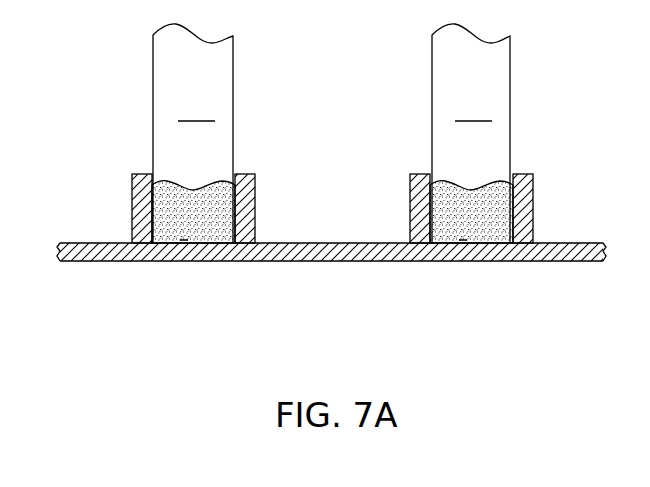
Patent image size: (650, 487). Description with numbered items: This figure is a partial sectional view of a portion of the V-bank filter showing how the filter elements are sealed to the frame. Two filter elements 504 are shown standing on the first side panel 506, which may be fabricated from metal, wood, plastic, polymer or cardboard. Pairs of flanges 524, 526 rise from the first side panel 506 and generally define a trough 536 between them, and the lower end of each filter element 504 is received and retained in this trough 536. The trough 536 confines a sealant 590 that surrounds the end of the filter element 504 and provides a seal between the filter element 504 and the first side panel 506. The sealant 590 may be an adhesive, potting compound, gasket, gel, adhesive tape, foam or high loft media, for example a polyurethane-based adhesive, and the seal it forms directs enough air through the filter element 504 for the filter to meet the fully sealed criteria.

The filter element 504 is at (331, 133).
The first side panel 506 is at (318, 266).
The flange 524 is at (132, 205).
The flange 526 is at (255, 210).
The trough 536 is at (184, 235).
The sealant 590 is at (200, 180).